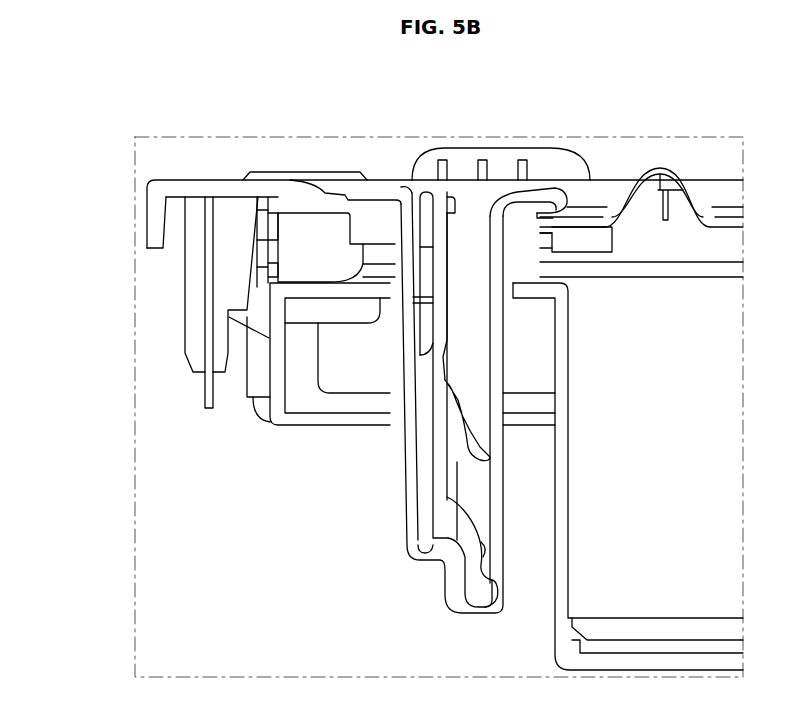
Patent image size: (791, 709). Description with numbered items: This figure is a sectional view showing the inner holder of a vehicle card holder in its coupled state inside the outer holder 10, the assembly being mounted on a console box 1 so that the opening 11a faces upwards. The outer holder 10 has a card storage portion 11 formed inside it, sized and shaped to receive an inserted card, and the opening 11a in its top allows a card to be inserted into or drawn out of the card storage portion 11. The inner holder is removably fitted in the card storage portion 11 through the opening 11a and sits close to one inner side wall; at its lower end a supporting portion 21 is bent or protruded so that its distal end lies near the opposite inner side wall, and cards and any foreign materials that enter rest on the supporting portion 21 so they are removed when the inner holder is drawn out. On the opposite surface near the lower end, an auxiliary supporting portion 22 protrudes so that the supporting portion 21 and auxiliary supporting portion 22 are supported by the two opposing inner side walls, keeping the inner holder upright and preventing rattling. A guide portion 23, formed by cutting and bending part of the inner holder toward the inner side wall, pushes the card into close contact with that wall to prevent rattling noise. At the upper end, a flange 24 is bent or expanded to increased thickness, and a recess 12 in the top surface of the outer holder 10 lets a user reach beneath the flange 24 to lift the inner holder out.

The console box 1 is at (195, 193).
The outer holder 10 is at (408, 470).
The card storage portion 11 is at (470, 315).
The opening 11a is at (467, 207).
The recess 12 is at (505, 192).
The supporting portion 21 is at (481, 574).
The auxiliary supporting portion 22 is at (428, 542).
The guide portion 23 is at (462, 443).
The flange 24 is at (448, 202).